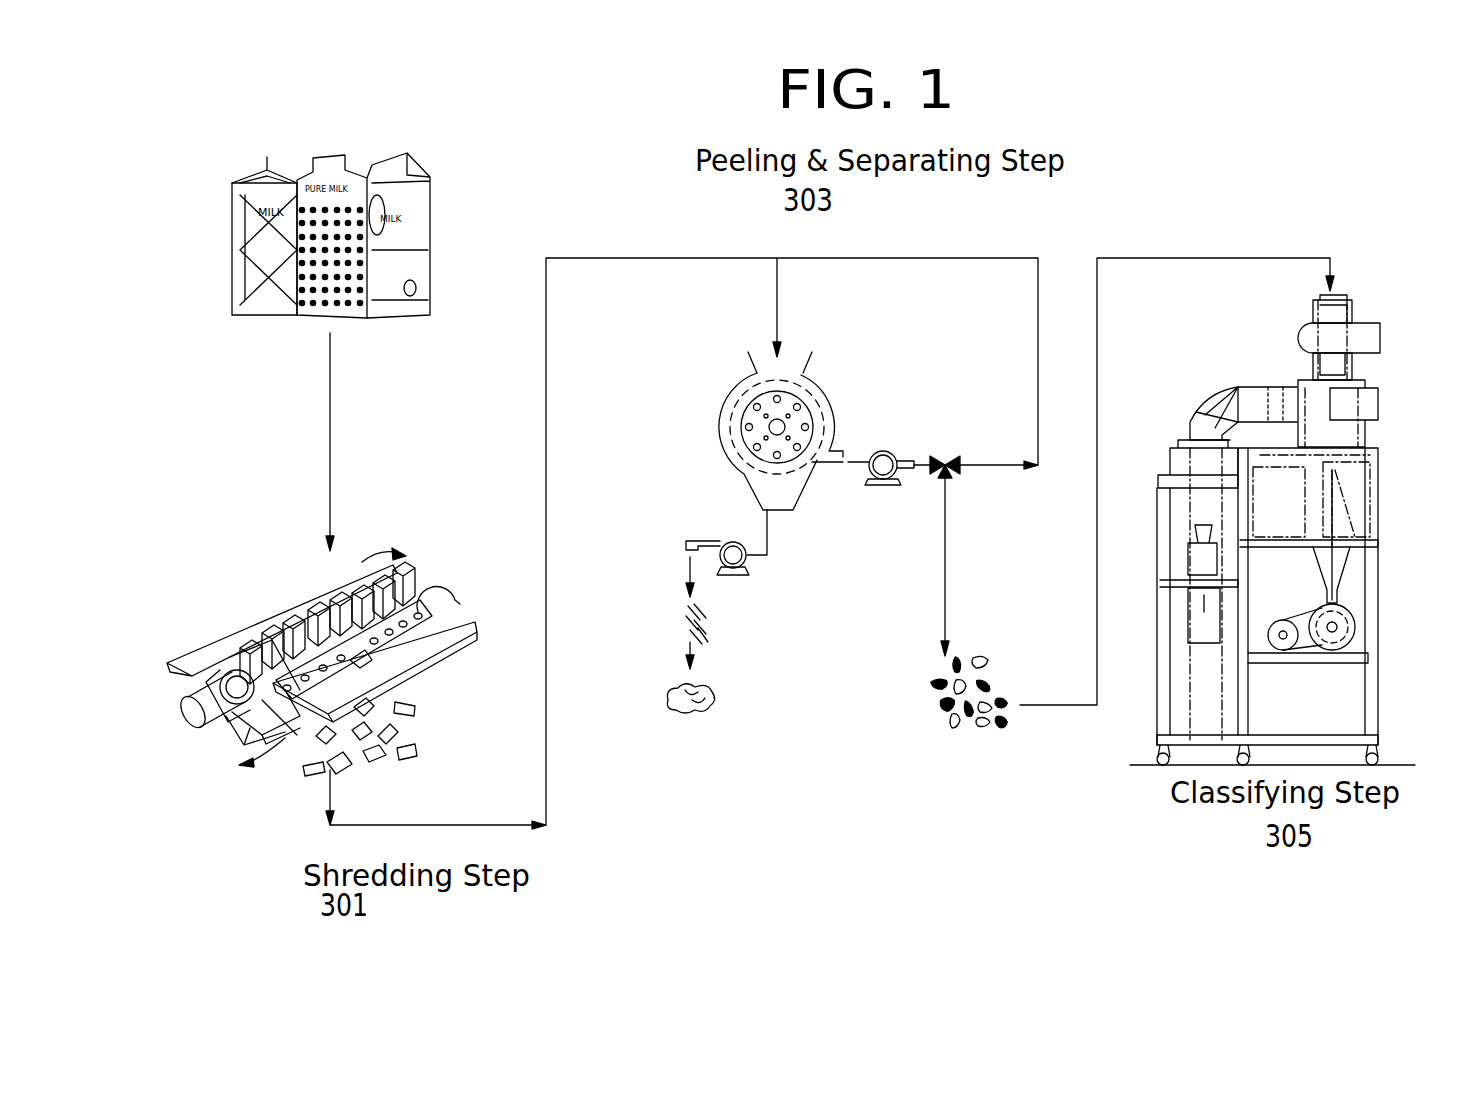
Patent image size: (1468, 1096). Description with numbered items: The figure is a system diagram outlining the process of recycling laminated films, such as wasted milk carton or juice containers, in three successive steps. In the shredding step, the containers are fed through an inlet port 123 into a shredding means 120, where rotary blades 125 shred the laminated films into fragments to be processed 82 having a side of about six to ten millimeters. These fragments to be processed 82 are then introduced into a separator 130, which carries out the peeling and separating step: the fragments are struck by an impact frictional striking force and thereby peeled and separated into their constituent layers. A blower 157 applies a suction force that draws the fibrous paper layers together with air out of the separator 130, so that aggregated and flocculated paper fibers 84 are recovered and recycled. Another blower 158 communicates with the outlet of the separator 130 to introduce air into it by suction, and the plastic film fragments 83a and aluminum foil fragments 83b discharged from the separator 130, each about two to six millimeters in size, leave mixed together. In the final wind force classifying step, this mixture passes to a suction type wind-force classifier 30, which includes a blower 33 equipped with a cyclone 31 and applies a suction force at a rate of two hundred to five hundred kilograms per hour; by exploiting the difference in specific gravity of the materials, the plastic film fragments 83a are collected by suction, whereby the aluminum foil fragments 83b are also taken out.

The shredding means 120 is at (192, 612).
The rotary blades 125 is at (398, 575).
The inlet port 123 is at (462, 617).
The fragments to be processed 82 is at (393, 727).
The separator 130 is at (836, 376).
The blower 157 is at (728, 541).
The blower 158 is at (883, 487).
The aggregated and flocculated paper fibers 84 is at (667, 700).
The plastic film fragments 83a is at (943, 705).
The aluminum foil fragments 83b is at (955, 730).
The suction type wind-force classifier 30 is at (1451, 370).
The blower 33 is at (1300, 340).
The cyclone 31 is at (1368, 432).